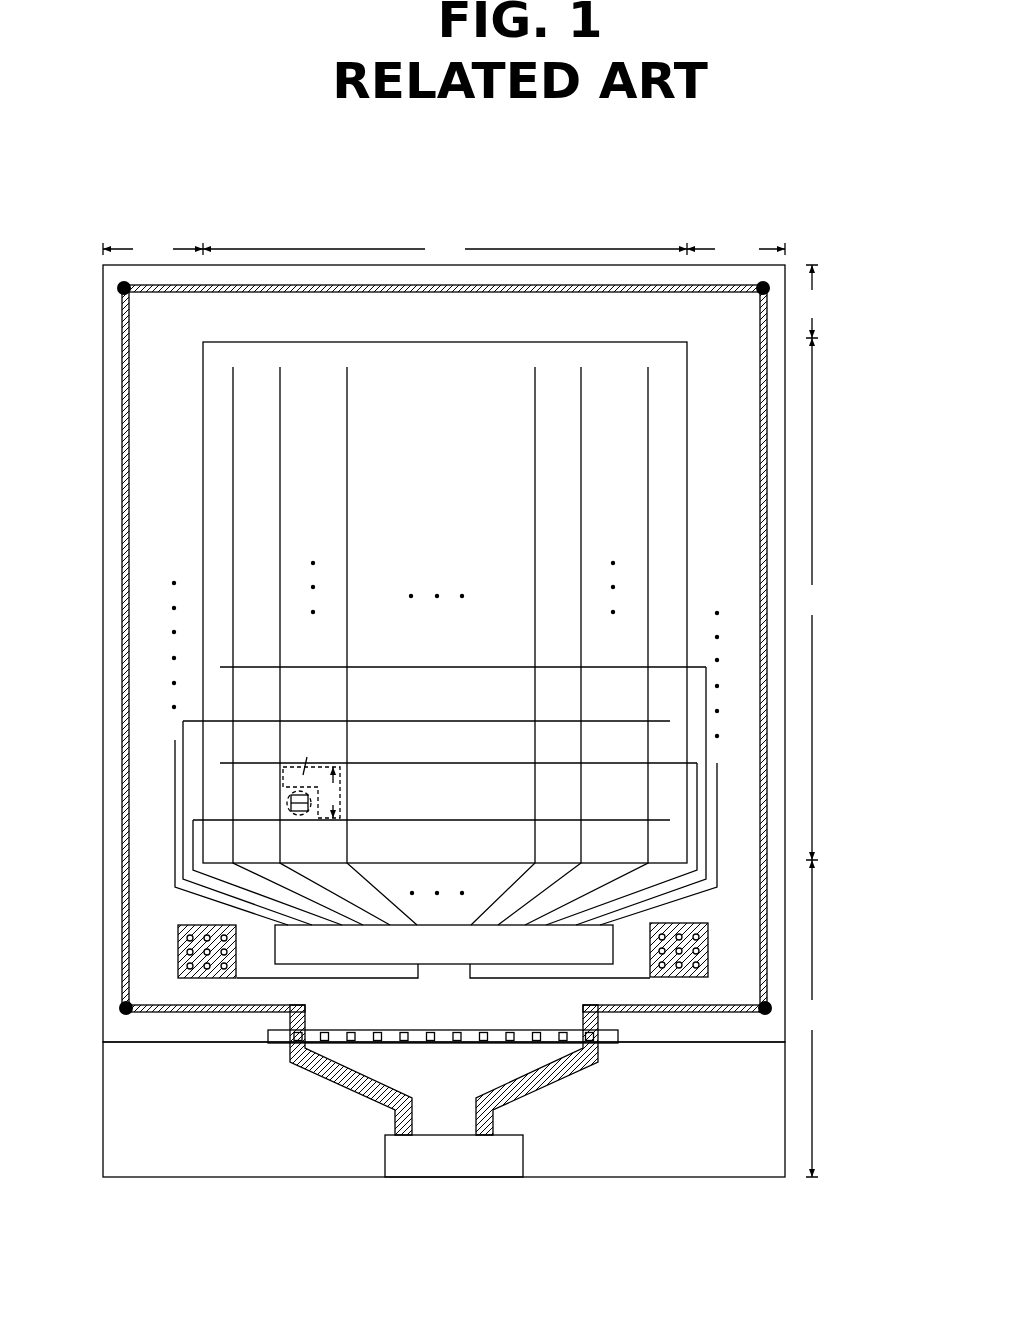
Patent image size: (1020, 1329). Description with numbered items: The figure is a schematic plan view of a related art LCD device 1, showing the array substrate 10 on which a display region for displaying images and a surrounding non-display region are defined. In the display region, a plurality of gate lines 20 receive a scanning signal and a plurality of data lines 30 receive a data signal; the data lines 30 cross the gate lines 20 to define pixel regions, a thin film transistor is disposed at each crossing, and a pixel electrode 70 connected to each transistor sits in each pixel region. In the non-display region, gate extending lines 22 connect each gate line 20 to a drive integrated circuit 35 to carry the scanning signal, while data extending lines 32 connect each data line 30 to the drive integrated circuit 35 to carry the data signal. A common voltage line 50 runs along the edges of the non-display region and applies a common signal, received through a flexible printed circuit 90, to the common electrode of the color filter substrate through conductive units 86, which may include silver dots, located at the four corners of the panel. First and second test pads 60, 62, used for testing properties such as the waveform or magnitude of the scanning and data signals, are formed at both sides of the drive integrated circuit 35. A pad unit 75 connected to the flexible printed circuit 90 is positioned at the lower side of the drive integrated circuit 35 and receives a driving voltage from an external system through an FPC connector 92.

The LCD device 1 is at (748, 209).
The array substrate 10 is at (786, 456).
The gate line 20 is at (452, 819).
The gate extending line 22 is at (175, 827).
The data line 30 is at (350, 740).
The data extending line 32 is at (382, 893).
The drive integrated circuit 35 is at (438, 952).
The common voltage line 50 is at (765, 497).
The first test pad 60 is at (178, 952).
The second test pad 62 is at (708, 945).
The pixel electrode 70 is at (342, 780).
The pad unit 75 is at (444, 1044).
The conductive unit 86 is at (770, 284).
The flexible printed circuit 90 is at (760, 1110).
The FPC connector 92 is at (457, 1165).